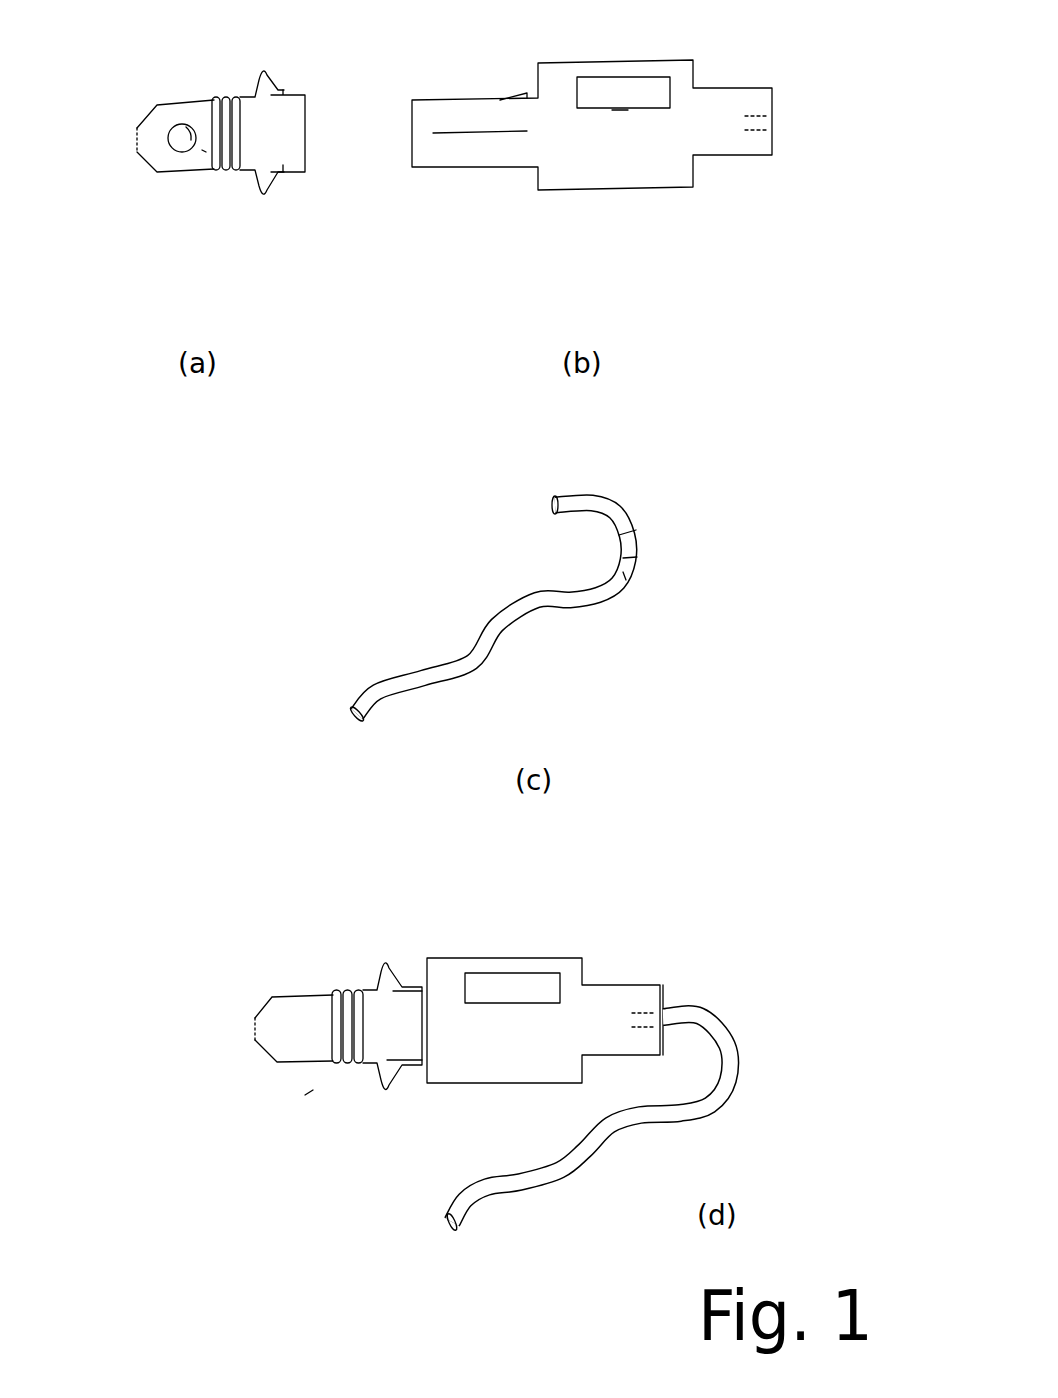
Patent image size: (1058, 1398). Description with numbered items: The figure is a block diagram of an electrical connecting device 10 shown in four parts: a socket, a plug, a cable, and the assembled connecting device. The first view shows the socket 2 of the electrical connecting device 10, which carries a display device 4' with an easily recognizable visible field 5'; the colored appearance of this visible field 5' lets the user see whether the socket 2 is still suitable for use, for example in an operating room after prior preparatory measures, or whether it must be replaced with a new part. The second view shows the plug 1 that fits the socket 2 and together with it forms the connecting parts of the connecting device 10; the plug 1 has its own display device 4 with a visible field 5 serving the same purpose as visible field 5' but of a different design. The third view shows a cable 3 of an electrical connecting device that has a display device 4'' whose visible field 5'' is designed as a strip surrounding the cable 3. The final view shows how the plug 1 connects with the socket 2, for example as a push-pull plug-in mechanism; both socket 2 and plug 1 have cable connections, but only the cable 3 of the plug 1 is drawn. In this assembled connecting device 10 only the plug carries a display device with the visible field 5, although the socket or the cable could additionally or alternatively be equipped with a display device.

The plug 1 is at (506, 68).
The socket 2 is at (170, 73).
The cable 3 is at (505, 587).
The display device 4 is at (575, 187).
The display device 4' is at (221, 202).
The display device 4'' is at (655, 605).
The visible field 5 is at (575, 501).
The visible field 5' is at (145, 182).
The visible field 5'' is at (674, 524).
The electrical connecting device 10 is at (313, 1095).